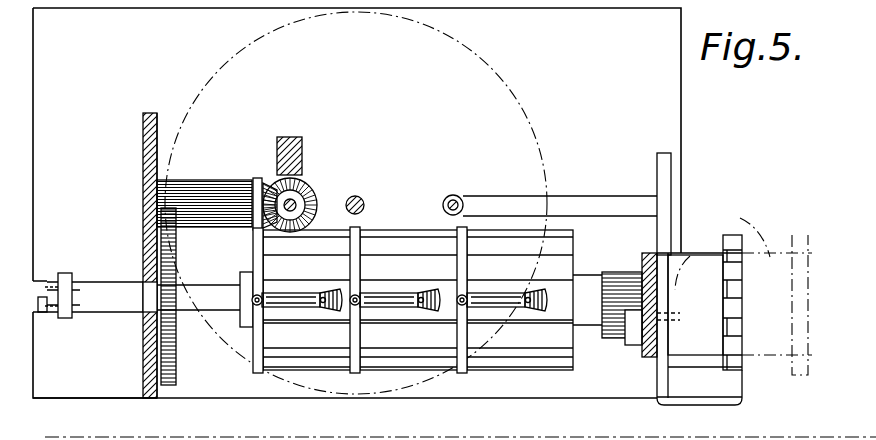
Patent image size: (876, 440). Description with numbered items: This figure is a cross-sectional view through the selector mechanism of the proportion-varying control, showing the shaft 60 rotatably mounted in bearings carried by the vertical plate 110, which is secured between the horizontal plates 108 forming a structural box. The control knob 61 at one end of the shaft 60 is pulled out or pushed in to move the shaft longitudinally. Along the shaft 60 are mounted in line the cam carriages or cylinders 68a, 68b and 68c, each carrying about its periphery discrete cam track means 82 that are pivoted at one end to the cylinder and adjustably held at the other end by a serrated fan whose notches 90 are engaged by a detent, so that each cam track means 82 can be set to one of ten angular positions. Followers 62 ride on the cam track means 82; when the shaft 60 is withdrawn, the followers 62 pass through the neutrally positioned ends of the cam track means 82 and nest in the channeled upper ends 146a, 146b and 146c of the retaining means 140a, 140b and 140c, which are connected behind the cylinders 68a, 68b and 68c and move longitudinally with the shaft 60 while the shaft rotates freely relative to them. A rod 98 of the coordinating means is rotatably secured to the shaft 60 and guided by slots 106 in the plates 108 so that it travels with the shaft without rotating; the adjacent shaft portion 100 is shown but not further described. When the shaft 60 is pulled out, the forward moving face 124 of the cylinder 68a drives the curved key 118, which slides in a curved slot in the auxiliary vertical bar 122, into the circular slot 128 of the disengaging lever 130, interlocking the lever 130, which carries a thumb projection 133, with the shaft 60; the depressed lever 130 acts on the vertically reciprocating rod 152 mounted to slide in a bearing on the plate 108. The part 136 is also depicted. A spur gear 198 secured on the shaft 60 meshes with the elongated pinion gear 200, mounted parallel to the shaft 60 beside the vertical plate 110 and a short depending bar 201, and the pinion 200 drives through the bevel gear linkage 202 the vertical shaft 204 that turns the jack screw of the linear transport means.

The shaft 60 is at (100, 302).
The control knob 61 is at (756, 232).
The followers 62 is at (322, 310).
The cam carriage or cylinder 68a is at (532, 358).
The cam carriage or cylinder 68b is at (422, 358).
The cam carriage or cylinder 68c is at (305, 358).
The cam track means 82 is at (300, 292).
The notches 90 is at (440, 310).
The rod 98 is at (66, 273).
The shaft end 100 is at (43, 312).
The slots 106 is at (40, 282).
The horizontal plates 108 is at (56, 385).
The vertical plate 110 is at (143, 233).
The curved key 118 is at (634, 346).
The auxiliary vertical bar 122 is at (648, 358).
The forward moving face 124 is at (574, 238).
The circular slot 128 is at (691, 262).
The disengaging lever 130 is at (671, 172).
The thumb projection 133 is at (720, 392).
The gear 136 is at (610, 340).
The retaining means 140a is at (462, 373).
The retaining means 140b is at (356, 373).
The retaining means 140c is at (258, 373).
The channeled upper end 146a is at (461, 295).
The channeled upper end 146b is at (354, 295).
The channeled upper end 146c is at (256, 295).
The reciprocating rod 152 is at (457, 200).
The spur gear 198 is at (176, 385).
The elongated pinion gear 200 is at (222, 165).
The post 201 is at (300, 163).
The bevel gear linkage 202 is at (262, 188).
The vertical shaft 204 is at (296, 200).